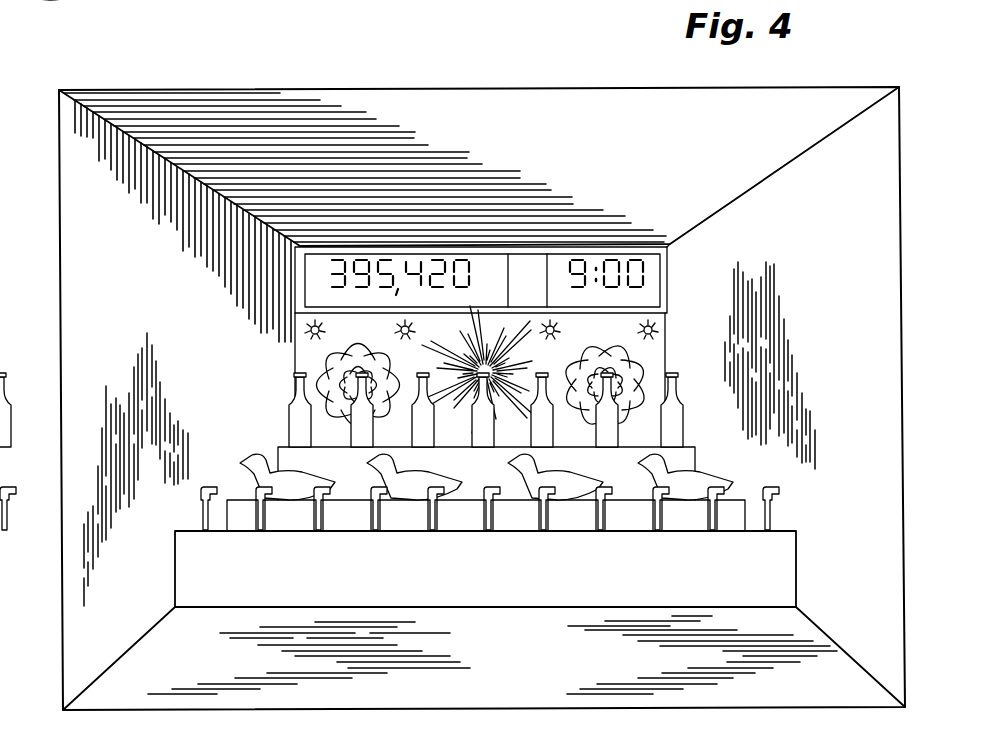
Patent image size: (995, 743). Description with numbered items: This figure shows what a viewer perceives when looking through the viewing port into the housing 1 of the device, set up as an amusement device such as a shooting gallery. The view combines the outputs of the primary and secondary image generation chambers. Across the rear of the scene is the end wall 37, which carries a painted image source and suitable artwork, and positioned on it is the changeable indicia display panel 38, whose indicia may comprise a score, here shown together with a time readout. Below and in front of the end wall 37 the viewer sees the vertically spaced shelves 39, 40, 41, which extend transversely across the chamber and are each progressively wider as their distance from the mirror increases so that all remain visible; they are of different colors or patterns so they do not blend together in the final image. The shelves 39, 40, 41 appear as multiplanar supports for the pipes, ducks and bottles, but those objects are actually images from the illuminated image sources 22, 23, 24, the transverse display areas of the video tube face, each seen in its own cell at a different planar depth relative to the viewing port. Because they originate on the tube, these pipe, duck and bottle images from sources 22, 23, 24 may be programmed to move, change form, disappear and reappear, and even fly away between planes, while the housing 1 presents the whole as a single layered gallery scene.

The housing 1 is at (888, 206).
The illuminated image source 22 is at (778, 483).
The illuminated image source 23 is at (712, 477).
The illuminated image source 24 is at (683, 410).
The end wall 37 is at (658, 347).
The changeable indicia display panel 38 is at (322, 293).
The shelf 39 is at (187, 581).
The shelf 40 is at (240, 508).
The shelf 41 is at (284, 456).